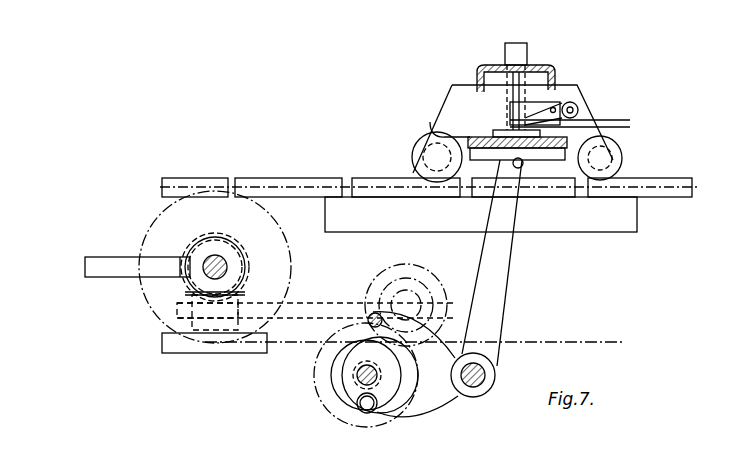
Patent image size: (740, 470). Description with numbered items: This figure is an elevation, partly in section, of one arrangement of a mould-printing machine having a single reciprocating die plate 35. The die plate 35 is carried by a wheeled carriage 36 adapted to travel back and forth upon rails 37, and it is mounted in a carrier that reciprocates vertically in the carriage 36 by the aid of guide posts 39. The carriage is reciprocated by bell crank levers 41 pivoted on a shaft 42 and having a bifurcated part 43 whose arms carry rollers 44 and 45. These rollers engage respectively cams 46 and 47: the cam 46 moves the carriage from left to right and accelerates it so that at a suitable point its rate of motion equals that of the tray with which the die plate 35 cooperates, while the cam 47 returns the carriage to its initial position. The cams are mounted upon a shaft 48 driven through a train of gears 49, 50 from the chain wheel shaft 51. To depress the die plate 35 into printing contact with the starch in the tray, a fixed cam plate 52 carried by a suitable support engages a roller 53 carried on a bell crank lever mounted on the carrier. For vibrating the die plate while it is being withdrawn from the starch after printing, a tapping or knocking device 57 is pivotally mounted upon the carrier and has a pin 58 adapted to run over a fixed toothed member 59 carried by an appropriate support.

The die plate 35 is at (562, 150).
The wheeled carriage 36 is at (517, 123).
The rails 37 is at (620, 222).
The guide posts 39 is at (505, 46).
The bell crank levers 41 is at (505, 265).
The shaft 42 is at (490, 372).
The bifurcated part 43 is at (433, 387).
The roller 44 is at (372, 316).
The roller 45 is at (377, 406).
The cam 46 is at (333, 351).
The cam 47 is at (333, 373).
The shaft 48 is at (360, 377).
The gear 49 is at (420, 280).
The gear 50 is at (172, 318).
The chain wheel shaft 51 is at (212, 266).
The fixed cam plate 52 is at (430, 126).
The roller 53 is at (487, 88).
The tapping or knocking device 57 is at (530, 112).
The pin 58 is at (556, 112).
The fixed toothed member 59 is at (600, 123).